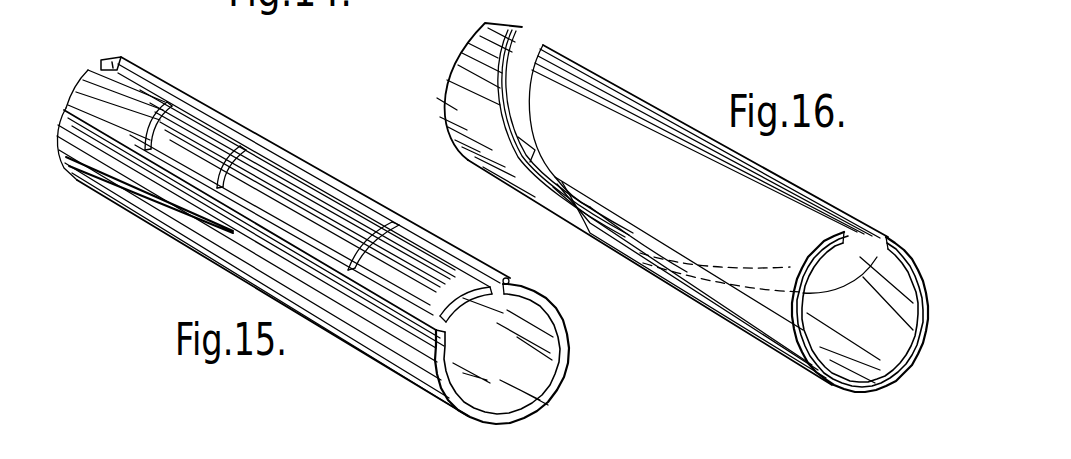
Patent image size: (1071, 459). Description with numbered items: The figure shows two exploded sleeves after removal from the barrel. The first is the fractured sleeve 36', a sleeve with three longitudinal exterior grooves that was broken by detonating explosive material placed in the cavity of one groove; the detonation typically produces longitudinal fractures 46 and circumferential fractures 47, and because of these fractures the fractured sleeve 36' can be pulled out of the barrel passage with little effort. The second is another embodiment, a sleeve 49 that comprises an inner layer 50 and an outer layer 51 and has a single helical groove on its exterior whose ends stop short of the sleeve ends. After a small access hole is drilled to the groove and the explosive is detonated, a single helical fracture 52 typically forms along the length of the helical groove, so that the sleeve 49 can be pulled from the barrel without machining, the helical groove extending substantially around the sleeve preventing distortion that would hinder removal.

In FIG. 15, the fractured sleeve 36' is at (313, 247).
In FIG. 15, the longitudinal fractures 46 is at (448, 265).
In FIG. 15, the circumferential fractures 47 is at (240, 150).
In FIG. 16, the sleeve 49 is at (677, 290).
In FIG. 16, the inner layer 50 is at (792, 332).
In FIG. 16, the outer layer 51 is at (820, 368).
In FIG. 16, the helical fracture 52 is at (527, 50).